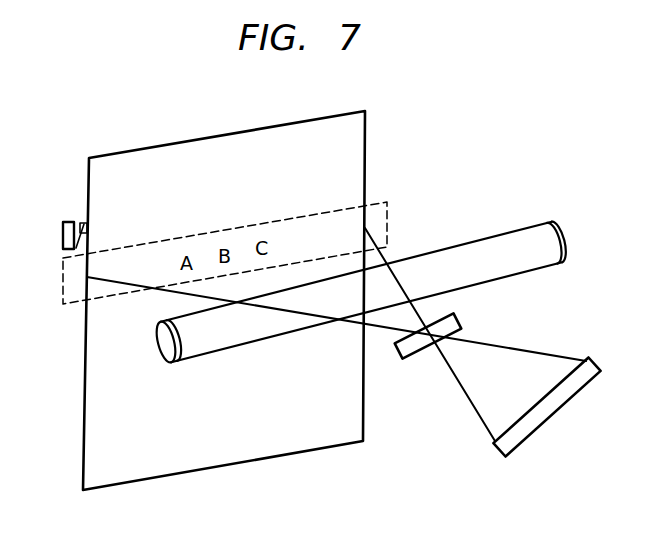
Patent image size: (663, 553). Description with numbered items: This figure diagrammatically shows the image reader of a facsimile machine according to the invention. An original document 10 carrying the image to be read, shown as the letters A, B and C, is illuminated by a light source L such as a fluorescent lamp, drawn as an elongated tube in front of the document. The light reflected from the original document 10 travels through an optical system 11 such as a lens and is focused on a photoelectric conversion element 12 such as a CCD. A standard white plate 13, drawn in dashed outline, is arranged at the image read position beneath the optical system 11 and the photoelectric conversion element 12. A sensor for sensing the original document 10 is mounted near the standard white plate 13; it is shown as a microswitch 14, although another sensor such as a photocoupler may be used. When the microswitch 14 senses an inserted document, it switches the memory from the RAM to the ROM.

The original document 10 is at (228, 133).
The optical system 11 is at (459, 322).
The photoelectric conversion element 12 is at (587, 355).
The standard white plate 13 is at (368, 204).
The microswitch 14 is at (62, 233).
The light source L is at (497, 233).